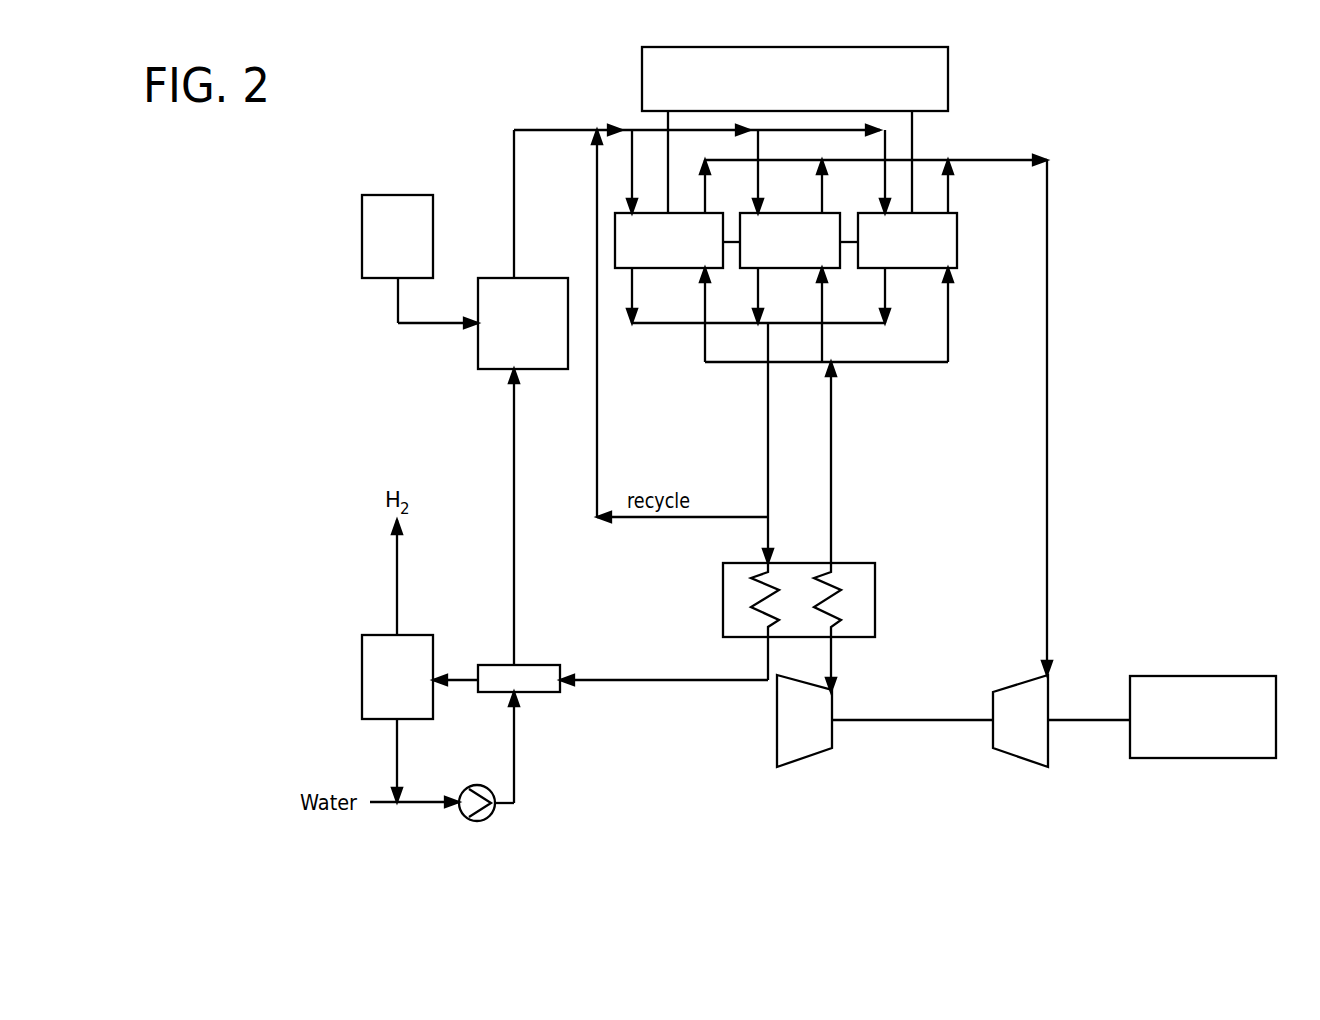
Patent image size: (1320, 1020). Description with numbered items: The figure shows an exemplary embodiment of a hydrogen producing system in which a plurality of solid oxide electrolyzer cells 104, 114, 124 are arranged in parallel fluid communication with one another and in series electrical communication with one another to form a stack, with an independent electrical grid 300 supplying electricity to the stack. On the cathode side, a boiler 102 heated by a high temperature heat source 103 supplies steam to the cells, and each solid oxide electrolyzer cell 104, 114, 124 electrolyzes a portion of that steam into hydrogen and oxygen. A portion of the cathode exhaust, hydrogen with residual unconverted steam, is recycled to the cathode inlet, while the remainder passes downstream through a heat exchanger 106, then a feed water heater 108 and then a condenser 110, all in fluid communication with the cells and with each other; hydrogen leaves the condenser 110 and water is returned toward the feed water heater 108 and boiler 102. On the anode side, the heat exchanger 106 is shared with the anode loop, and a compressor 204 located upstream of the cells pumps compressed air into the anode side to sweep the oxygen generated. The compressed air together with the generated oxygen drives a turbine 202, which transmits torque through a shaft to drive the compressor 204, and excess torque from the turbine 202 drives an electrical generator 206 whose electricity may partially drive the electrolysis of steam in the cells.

The independent electrical grid 300 is at (948, 73).
The solid oxide electrolyzer cell 104 is at (658, 270).
The solid oxide electrolyzer cell 114 is at (778, 270).
The solid oxide electrolyzer cell 124 is at (958, 233).
The high temperature heat source 103 is at (393, 195).
The boiler 102 is at (478, 343).
The heat exchanger 106 is at (853, 563).
The condenser 110 is at (412, 635).
The feed water heater 108 is at (537, 665).
The compressor 204 is at (777, 713).
The turbine 202 is at (992, 734).
The electrical generator 206 is at (1225, 676).